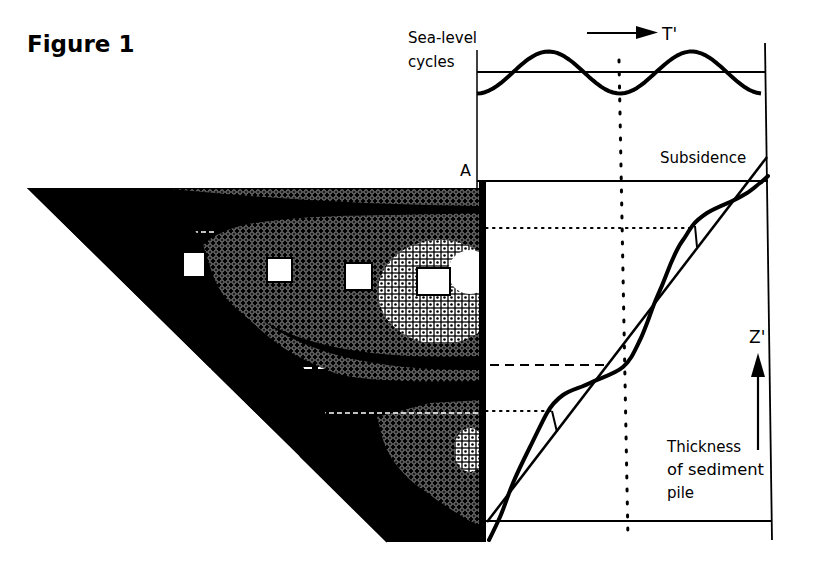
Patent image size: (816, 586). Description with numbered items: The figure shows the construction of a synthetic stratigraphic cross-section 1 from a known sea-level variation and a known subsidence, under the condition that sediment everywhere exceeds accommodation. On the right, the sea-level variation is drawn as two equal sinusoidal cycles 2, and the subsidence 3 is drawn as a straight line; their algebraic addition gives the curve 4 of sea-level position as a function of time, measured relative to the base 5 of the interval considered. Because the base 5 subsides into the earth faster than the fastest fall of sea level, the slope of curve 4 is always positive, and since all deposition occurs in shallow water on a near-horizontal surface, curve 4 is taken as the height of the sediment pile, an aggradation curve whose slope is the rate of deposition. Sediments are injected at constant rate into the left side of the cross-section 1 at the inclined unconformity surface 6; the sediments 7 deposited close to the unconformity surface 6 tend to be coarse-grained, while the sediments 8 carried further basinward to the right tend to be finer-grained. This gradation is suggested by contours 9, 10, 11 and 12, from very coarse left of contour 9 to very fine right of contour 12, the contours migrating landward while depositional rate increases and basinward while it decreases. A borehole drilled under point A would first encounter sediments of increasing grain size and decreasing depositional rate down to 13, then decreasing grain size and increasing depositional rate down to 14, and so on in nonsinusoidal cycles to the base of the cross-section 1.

The synthetic stratigraphic cross-section 1 is at (452, 185).
The sea-level cycles 2 is at (492, 96).
The subsidence 3 is at (680, 272).
The aggradation curve 4 is at (676, 255).
The base of the interval 5 is at (548, 522).
The unconformity surface 6 is at (370, 523).
The coarse-grained sediments 7 is at (207, 365).
The finer-grained sediments 8 is at (475, 361).
The contour 9 is at (194, 264).
The contour 10 is at (280, 270).
The contour 11 is at (359, 276).
The contour 12 is at (433, 281).
The level of increasing grain size and decreasing depositional rate 13 is at (486, 207).
The level of decreasing grain size and increasing depositional rate 14 is at (486, 283).